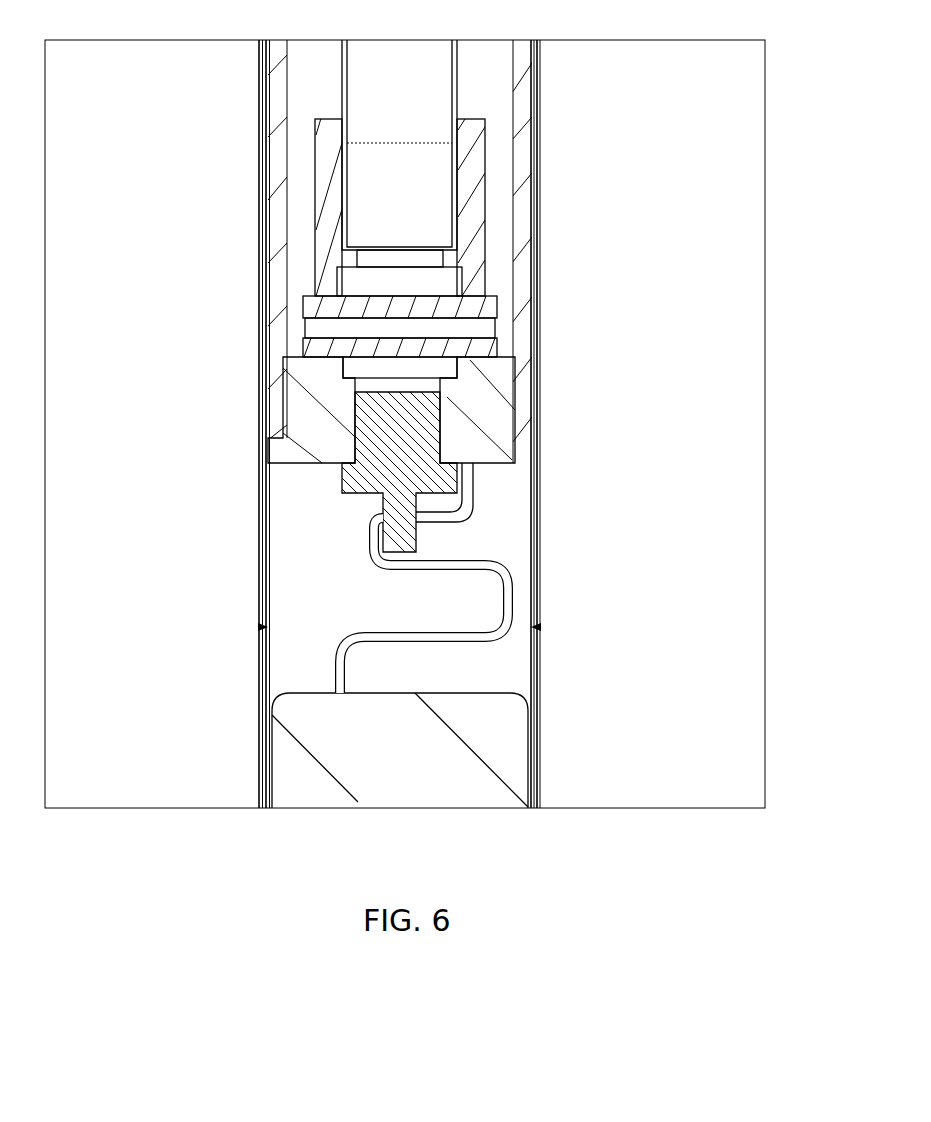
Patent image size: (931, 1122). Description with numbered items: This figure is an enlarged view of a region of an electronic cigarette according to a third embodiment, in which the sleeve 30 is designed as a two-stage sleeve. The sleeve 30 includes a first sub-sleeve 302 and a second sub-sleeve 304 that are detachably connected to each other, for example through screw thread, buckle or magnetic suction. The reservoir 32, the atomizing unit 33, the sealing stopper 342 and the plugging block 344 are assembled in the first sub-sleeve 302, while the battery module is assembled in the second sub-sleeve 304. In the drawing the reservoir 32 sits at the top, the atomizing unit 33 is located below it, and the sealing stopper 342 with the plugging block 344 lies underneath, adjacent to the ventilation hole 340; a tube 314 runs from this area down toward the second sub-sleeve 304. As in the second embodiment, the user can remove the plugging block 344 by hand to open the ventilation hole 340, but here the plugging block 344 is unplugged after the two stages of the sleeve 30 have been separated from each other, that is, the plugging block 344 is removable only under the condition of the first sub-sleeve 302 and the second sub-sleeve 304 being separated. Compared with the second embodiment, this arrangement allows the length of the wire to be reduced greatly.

The sleeve 30 is at (304, 424).
The first sub-sleeve 302 is at (258, 567).
The second sub-sleeve 304 is at (258, 678).
The reservoir 32 is at (500, 93).
The atomizing unit 33 is at (497, 297).
The ventilation hole 340 is at (403, 387).
The sealing stopper 342 is at (450, 430).
The plugging block 344 is at (473, 474).
The coiled tube 314 is at (510, 613).